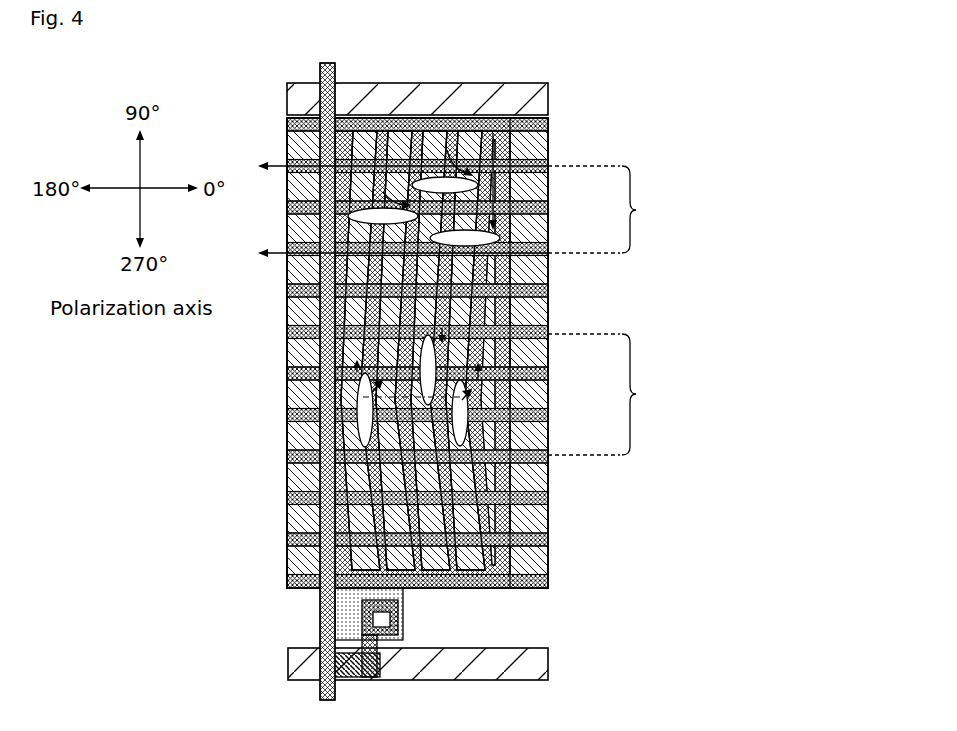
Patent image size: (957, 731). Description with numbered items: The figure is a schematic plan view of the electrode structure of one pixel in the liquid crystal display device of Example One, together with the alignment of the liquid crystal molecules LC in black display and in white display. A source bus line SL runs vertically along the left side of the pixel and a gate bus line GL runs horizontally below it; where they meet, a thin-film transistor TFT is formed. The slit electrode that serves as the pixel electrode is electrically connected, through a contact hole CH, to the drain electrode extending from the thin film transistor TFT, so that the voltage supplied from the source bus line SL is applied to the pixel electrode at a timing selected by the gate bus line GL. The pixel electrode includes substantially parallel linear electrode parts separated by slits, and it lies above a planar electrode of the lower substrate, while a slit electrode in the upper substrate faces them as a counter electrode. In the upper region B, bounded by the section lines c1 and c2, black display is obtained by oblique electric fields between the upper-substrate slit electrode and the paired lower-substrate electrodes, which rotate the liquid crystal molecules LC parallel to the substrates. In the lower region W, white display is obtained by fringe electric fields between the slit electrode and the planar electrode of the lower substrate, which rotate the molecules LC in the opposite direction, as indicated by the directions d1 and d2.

The source bus line SL is at (320, 70).
The gate bus line GL is at (536, 665).
The thin-film transistor TFT is at (326, 670).
The contact hole CH is at (371, 620).
The liquid crystal molecule LC is at (507, 235).
The region B is at (637, 209).
The region W is at (602, 394).
The cross-section line c1 is at (424, 166).
The cross-section line c2 is at (424, 253).
The alignment direction d1 is at (403, 364).
The alignment direction d2 is at (464, 364).